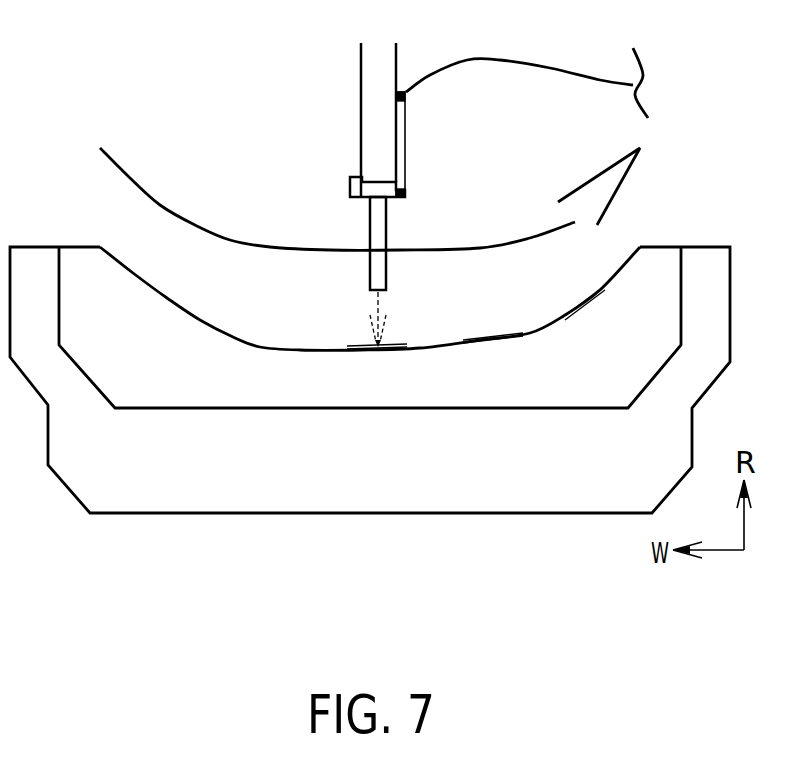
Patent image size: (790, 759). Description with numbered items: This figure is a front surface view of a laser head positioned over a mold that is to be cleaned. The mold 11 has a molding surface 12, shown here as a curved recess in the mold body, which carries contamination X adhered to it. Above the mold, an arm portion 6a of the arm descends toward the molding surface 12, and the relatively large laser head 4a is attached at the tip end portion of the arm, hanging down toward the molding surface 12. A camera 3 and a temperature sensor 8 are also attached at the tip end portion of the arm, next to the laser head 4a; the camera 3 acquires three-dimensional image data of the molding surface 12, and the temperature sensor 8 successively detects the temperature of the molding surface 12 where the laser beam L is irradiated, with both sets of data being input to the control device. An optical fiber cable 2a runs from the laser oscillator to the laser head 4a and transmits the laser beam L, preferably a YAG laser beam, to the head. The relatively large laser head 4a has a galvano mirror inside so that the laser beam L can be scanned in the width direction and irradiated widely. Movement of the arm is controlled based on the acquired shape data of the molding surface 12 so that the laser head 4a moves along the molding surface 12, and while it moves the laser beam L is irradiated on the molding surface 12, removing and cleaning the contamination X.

The mold 11 is at (85, 247).
The molding surface 12 is at (245, 345).
The optical fiber cable 2a is at (467, 62).
The arm portion 6a is at (367, 104).
The camera 3 is at (350, 187).
The temperature sensor 8 is at (405, 193).
The relatively large laser head 4a is at (387, 237).
The laser beam L is at (372, 304).
The contamination X is at (397, 342).